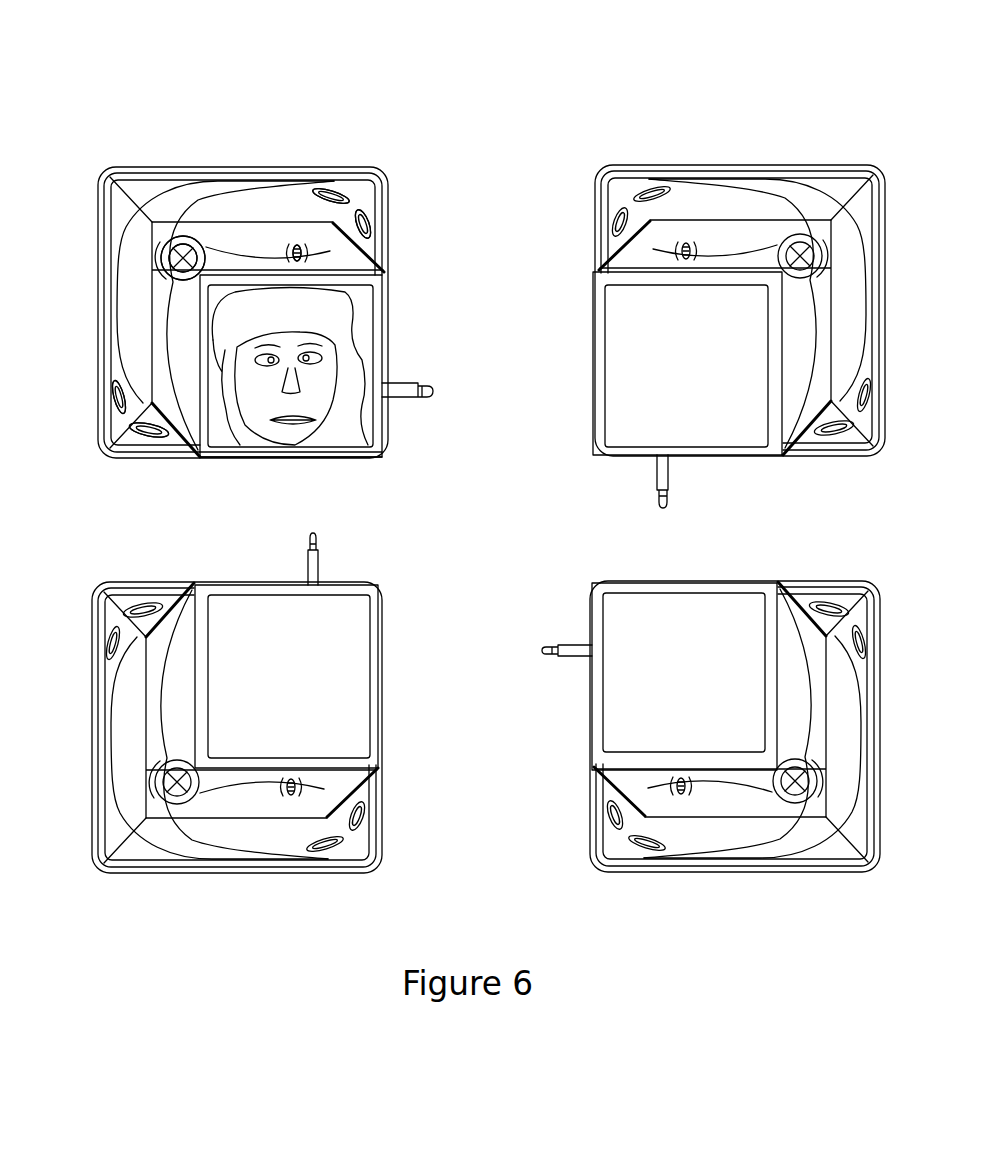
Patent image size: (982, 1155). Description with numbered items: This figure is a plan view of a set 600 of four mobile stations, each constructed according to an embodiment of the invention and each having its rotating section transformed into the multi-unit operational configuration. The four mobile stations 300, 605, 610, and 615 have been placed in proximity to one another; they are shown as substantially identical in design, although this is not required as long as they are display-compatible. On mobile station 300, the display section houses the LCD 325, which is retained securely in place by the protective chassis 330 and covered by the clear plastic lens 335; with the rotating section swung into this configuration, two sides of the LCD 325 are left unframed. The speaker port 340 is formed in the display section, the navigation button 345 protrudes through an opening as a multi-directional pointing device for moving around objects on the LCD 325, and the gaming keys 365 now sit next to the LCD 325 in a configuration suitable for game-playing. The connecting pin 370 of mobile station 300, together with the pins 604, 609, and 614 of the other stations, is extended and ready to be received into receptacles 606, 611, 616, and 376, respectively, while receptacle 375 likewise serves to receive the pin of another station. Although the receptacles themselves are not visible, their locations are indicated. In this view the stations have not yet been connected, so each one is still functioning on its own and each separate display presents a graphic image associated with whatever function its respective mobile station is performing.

The set of four mobile stations 600 is at (482, 94).
The mobile station 300 is at (189, 141).
The gaming keys 365 is at (371, 216).
The navigation button 345 is at (173, 258).
The speaker port 340 is at (318, 254).
The clear plastic lens 335 is at (360, 310).
The LCD 325 is at (370, 340).
The receptacle 375 is at (395, 422).
The protective chassis 330 is at (380, 449).
The receptacle 376 is at (321, 470).
The connector pin 370 is at (411, 372).
The mobile station 605 is at (799, 138).
The receptacle 606 is at (587, 398).
The pin 604 is at (678, 475).
The mobile station 615 is at (209, 901).
The receptacle 616 is at (393, 655).
The pin 614 is at (318, 570).
The mobile station 610 is at (724, 922).
The receptacle 611 is at (665, 568).
The pin 609 is at (567, 665).